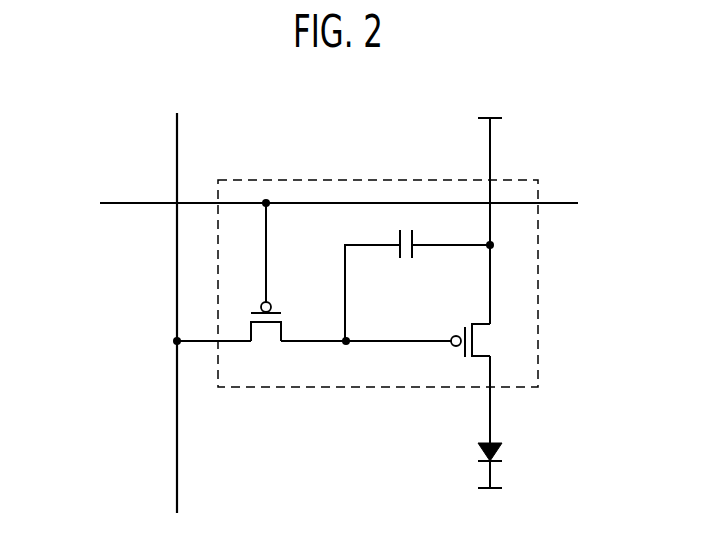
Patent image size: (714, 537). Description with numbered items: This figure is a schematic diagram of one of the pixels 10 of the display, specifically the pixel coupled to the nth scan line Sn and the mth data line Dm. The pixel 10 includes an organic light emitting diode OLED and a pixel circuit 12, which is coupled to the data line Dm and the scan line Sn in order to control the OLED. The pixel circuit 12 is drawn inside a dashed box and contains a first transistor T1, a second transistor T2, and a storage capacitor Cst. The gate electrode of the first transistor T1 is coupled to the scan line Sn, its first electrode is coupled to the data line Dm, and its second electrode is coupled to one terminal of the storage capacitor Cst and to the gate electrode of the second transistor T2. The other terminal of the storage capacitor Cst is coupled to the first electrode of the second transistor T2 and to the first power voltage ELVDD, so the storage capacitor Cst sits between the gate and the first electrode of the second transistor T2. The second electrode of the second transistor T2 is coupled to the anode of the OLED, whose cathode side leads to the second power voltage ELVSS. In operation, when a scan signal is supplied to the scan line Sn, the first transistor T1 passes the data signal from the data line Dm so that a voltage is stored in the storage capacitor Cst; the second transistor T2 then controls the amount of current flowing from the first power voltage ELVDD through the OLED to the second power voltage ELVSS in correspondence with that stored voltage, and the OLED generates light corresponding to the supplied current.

The pixel 10 is at (70, 85).
The pixel circuit 12 is at (538, 257).
The data line Dm is at (177, 123).
The scan line Sn is at (116, 204).
The first transistor T1 is at (261, 282).
The second transistor T2 is at (428, 341).
The storage capacitor Cst is at (419, 285).
The organic light emitting diode OLED is at (463, 422).
The first power voltage ELVDD is at (490, 205).
The second power voltage ELVSS is at (490, 506).